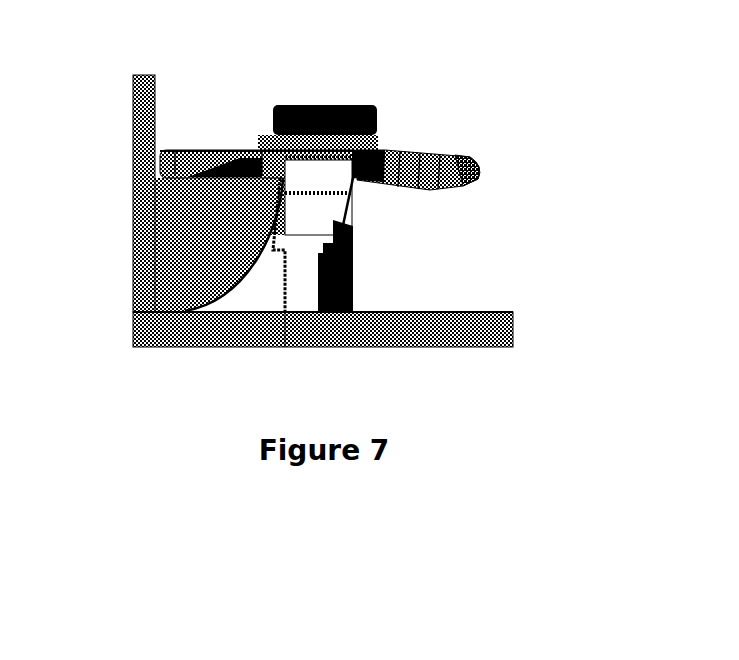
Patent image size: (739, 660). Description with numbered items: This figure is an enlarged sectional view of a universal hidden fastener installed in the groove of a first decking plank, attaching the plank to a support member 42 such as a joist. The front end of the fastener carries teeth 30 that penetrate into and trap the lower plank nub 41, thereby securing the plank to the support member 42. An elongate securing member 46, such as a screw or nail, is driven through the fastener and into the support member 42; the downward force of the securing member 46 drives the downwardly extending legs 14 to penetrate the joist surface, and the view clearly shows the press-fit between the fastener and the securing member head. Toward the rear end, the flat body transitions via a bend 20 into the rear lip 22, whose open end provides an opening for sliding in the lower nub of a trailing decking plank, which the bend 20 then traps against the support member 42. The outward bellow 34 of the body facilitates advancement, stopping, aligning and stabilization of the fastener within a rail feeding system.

The legs 14 is at (305, 263).
The bend 20 is at (438, 185).
The rear lip 22 is at (468, 170).
The teeth 30 is at (188, 160).
The outward bellow 34 is at (336, 162).
The lower plank nub 41 is at (213, 238).
The support member 42 is at (480, 332).
The elongate securing member 46 is at (337, 276).